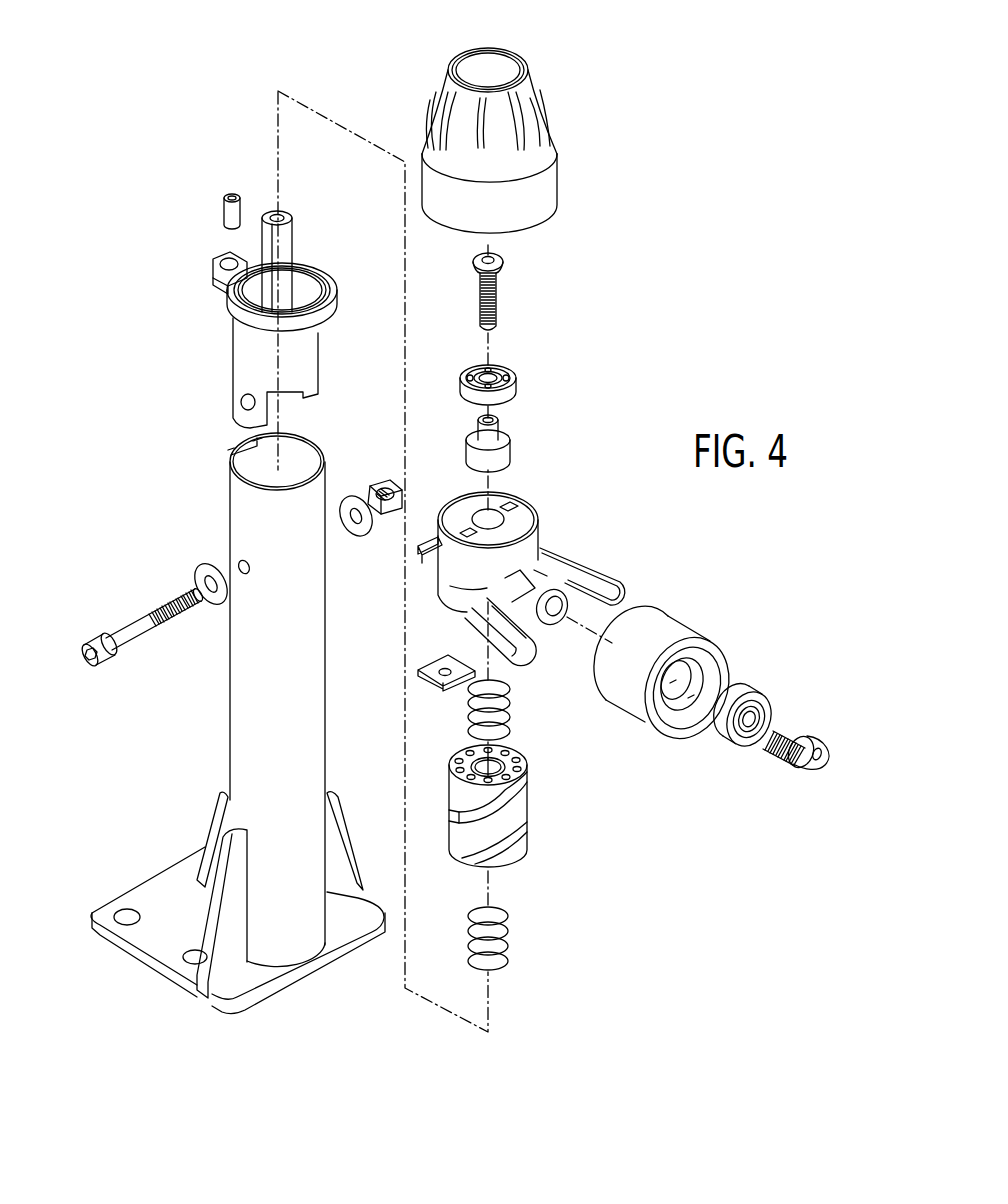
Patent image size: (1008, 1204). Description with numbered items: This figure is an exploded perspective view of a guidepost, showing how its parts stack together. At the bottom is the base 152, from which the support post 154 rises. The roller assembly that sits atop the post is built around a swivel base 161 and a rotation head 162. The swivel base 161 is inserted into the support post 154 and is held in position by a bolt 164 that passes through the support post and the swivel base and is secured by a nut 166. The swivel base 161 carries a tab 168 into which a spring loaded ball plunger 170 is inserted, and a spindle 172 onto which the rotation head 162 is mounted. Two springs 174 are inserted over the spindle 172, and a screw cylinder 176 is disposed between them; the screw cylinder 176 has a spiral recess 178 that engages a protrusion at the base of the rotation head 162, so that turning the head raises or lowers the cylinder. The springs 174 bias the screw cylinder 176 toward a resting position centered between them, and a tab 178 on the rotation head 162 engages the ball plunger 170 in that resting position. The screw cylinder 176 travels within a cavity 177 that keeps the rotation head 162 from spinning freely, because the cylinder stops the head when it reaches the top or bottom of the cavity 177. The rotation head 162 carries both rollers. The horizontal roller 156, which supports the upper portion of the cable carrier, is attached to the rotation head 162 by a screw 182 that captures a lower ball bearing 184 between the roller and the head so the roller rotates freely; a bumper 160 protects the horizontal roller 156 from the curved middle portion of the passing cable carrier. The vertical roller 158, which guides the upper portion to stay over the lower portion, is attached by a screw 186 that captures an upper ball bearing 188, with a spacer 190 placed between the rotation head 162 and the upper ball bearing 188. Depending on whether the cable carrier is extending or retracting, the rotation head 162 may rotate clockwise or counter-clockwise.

The base 152 is at (145, 935).
The support post 154 is at (240, 735).
The horizontal roller 156 is at (690, 632).
The vertical roller 158 is at (555, 158).
The bumper 160 is at (625, 580).
The swivel base 161 is at (262, 342).
The rotation head 162 is at (535, 522).
The bolt 164 is at (128, 637).
The nut 166 is at (375, 482).
The tab 168 is at (215, 273).
The spring loaded ball plunger 170 is at (228, 200).
The spindle 172 is at (290, 242).
The springs 174 is at (508, 722).
The screw cylinder 176 is at (530, 825).
The cavity 177 is at (300, 289).
The spiral recess 178 is at (428, 560).
The screw 182 is at (820, 742).
The lower ball bearing 184 is at (752, 700).
The screw 186 is at (500, 278).
The upper ball bearing 188 is at (515, 393).
The spacer 190 is at (510, 453).